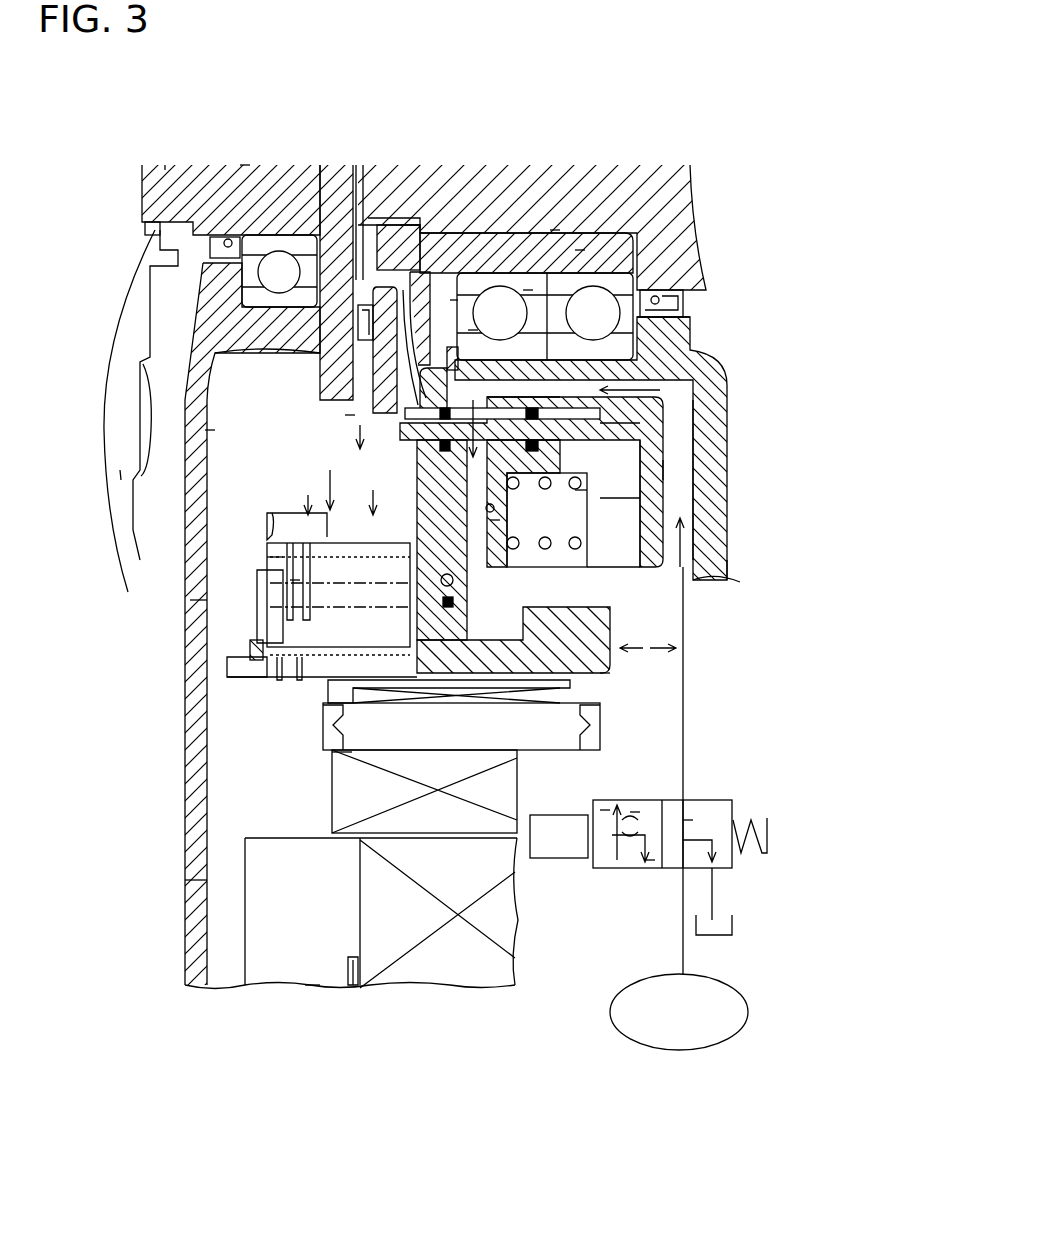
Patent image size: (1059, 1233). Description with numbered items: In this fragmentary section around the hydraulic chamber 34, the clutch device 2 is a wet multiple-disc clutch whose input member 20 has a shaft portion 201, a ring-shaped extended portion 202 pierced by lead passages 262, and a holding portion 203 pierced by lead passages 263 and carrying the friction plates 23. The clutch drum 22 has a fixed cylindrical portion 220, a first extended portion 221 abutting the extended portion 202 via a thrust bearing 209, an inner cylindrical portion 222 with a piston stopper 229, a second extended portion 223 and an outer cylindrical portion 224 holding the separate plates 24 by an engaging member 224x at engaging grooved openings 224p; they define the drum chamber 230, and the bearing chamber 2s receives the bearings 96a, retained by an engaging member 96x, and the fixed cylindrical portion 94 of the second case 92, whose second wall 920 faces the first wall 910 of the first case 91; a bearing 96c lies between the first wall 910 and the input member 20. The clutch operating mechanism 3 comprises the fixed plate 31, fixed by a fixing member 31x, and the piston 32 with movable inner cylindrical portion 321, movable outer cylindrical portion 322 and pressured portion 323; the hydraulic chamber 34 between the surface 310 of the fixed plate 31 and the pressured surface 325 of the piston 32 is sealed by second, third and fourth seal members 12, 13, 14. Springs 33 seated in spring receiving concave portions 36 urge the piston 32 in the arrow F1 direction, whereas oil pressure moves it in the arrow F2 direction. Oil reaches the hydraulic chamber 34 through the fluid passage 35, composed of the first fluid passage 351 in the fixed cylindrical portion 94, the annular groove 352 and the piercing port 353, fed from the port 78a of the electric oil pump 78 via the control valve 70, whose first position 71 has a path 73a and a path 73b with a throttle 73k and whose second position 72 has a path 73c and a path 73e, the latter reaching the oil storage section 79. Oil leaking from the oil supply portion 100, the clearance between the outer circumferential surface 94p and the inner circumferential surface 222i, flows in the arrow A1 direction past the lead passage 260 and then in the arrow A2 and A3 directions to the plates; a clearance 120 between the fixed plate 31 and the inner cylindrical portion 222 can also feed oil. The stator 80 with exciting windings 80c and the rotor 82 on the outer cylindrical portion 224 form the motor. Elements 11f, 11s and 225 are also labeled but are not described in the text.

The clutch device 2 is at (221, 186).
The input member 20 is at (168, 170).
The shaft portion 201 is at (243, 172).
The extended portion 202 is at (270, 270).
The holding portion 203 is at (272, 515).
The thrust bearing 209 is at (333, 200).
The bearing chamber 2s is at (405, 230).
The bearing 96c is at (280, 270).
The bearings 96a is at (662, 205).
The engaging member 96x is at (455, 300).
The oil supply portion 100 is at (358, 215).
The inner circumferential surface 222i is at (393, 180).
The first shaft portion 11f is at (430, 240).
The second shaft portion 11s is at (555, 230).
The piercing port 353 is at (472, 330).
The annular groove 352 is at (528, 290).
The inner cylindrical portion 222 is at (580, 250).
The fixed cylindrical portion 220 is at (502, 232).
The outer circumferential surface 94p is at (700, 280).
The fixed cylindrical portion 94 is at (682, 342).
The second case 92 is at (700, 357).
The first fluid passage 351 is at (720, 395).
The movable inner cylindrical portion 321 is at (650, 412).
The piston stopper 229 is at (640, 432).
The springs 33 is at (645, 455).
The second extended portion 223 is at (645, 472).
The drum chamber 230 is at (600, 500).
The clutch drum 22 is at (700, 510).
The fluid passage 35 is at (715, 572).
The second wall 920 is at (712, 580).
The first extended portion 221 is at (260, 340).
The lead passage 260 is at (350, 384).
The arrow A1 direction A1 is at (355, 402).
The fixing member 31x is at (350, 418).
The arrow A3 direction A3 is at (330, 470).
The arrow A2 direction A2 is at (305, 500).
The lead passages 262 is at (215, 430).
The friction plates 23 is at (268, 563).
The lead passages 263 is at (300, 575).
The fixed plate 31 is at (290, 618).
The first wall 910 is at (195, 600).
The engaging member 224x is at (245, 680).
The separate plates 24 is at (278, 680).
The engaging grooved openings 224p is at (335, 757).
The rotor 82 is at (340, 798).
The first case 91 is at (190, 884).
The exciting windings 80c is at (305, 985).
The stator 80 is at (440, 985).
The pressured portion 323 is at (470, 590).
The clearance 120 is at (437, 455).
The second seal member 12 is at (430, 515).
The surface 310 is at (490, 508).
The pressured surface 325 is at (492, 520).
The fourth seal member 14 is at (580, 490).
The spring receiving concave portion 36 is at (520, 548).
The piston 32 is at (600, 592).
The hydraulic chamber 34 is at (606, 600).
The clutch operating mechanism 3 is at (630, 652).
The arrow F1 direction F1 is at (634, 656).
The arrow F2 direction F2 is at (660, 656).
The hub portion 225 is at (448, 645).
The third seal member 13 is at (464, 640).
The outer cylindrical portion 224 is at (507, 667).
The movable outer cylindrical portion 322 is at (510, 758).
The path 73a is at (612, 806).
The throttle 73k is at (635, 812).
The path 73c is at (688, 818).
The path 73e is at (735, 820).
The control valve 70 is at (732, 868).
The first position 71 is at (625, 868).
The path 73b is at (650, 868).
The second position 72 is at (715, 870).
The oil storage section 79 is at (733, 935).
The port 78a is at (683, 975).
The electric oil pump 78 is at (730, 1028).